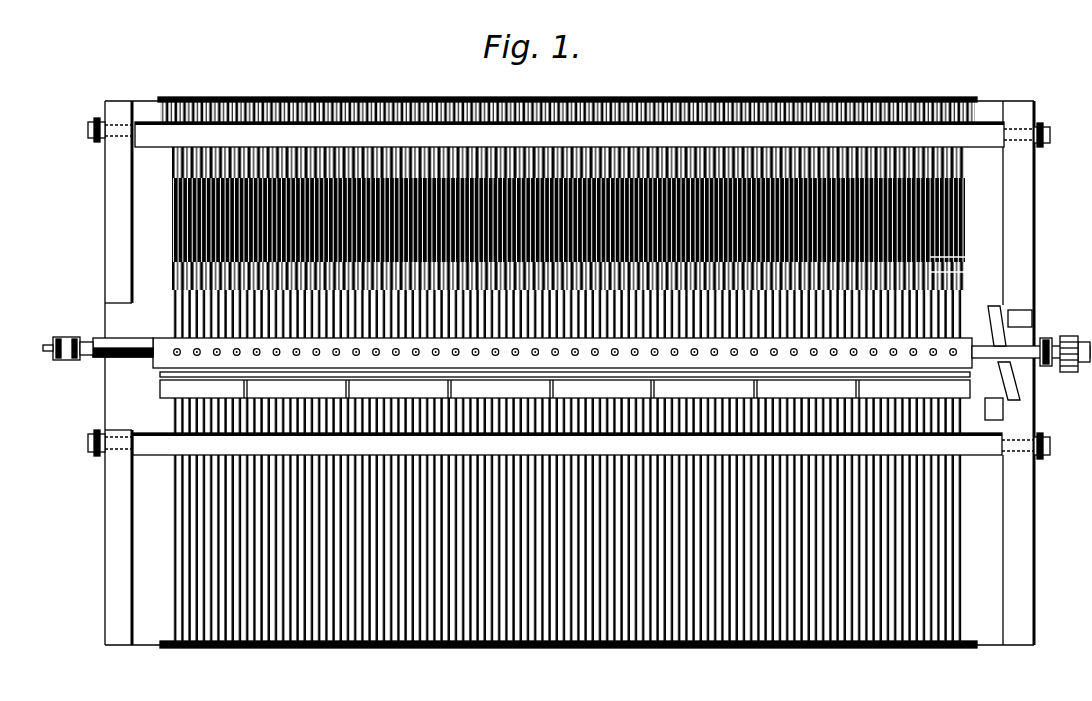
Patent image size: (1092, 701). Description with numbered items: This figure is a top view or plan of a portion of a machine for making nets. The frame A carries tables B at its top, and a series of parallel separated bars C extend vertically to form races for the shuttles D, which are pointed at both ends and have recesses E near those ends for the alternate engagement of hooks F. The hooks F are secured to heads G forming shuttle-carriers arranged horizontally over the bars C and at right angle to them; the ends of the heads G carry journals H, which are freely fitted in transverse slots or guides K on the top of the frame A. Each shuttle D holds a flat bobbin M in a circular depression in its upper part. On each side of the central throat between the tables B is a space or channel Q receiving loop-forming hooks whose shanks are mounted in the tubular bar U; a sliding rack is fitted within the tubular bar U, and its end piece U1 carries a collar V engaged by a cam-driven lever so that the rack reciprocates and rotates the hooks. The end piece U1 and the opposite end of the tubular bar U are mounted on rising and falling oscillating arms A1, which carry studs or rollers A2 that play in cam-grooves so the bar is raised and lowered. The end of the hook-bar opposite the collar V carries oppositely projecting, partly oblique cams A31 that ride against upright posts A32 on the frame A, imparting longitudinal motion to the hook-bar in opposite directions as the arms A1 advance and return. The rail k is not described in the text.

The slots or guides K is at (110, 222).
The tables B is at (567, 373).
The heads G is at (568, 289).
The journals H is at (88, 130).
The hooks F is at (162, 150).
The bobbin M is at (950, 197).
The recesses E is at (955, 260).
The shuttles D is at (955, 275).
The parallel separated bars C is at (568, 314).
The perforated rail k is at (562, 354).
The space or channel Q is at (565, 386).
The tubular bar U is at (115, 345).
The collar V is at (66, 340).
The end piece U1 is at (43, 348).
The frame A is at (1070, 375).
The rising and falling oscillating arms A1 is at (1046, 338).
The studs or rollers A2 is at (1069, 338).
The cams A31 is at (990, 312).
The upright posts A32 is at (1005, 340).